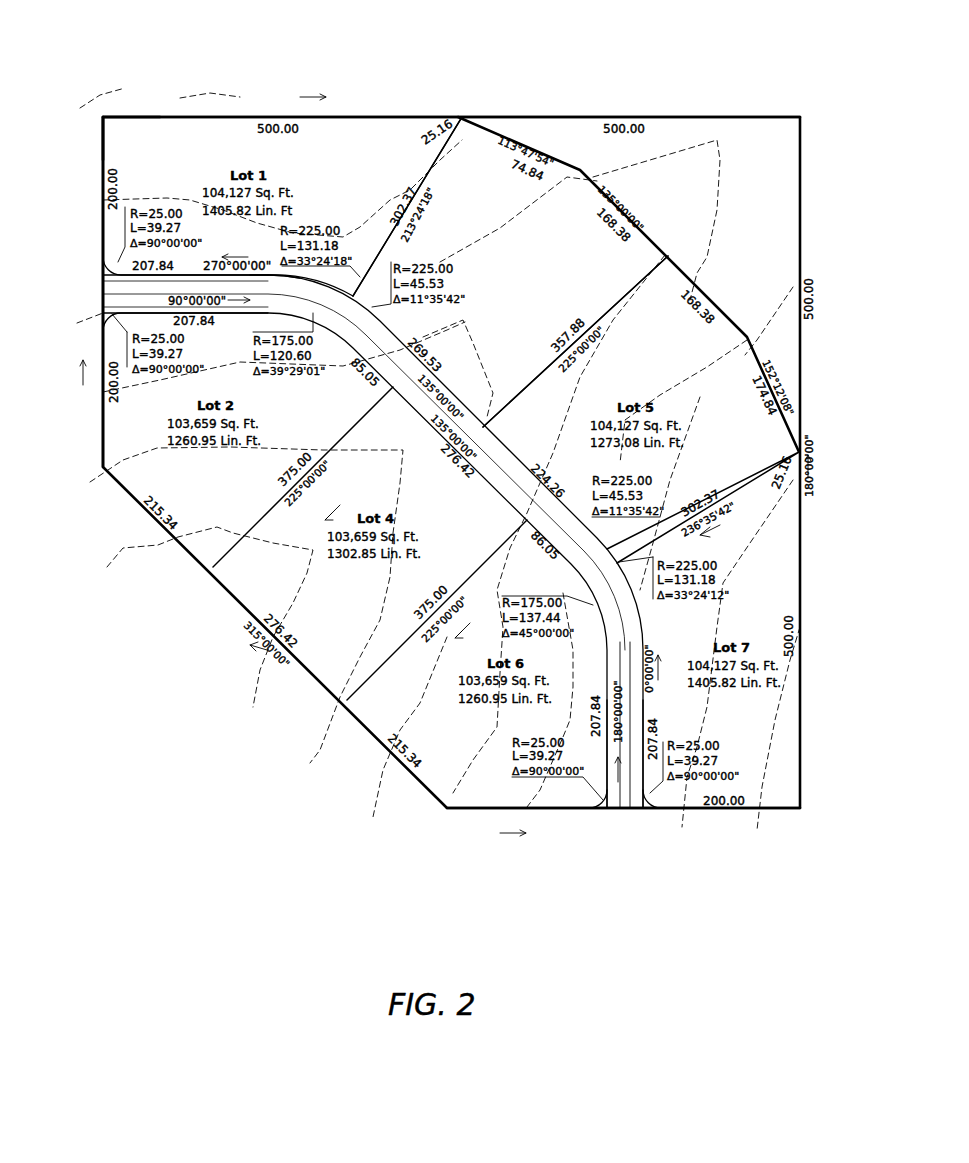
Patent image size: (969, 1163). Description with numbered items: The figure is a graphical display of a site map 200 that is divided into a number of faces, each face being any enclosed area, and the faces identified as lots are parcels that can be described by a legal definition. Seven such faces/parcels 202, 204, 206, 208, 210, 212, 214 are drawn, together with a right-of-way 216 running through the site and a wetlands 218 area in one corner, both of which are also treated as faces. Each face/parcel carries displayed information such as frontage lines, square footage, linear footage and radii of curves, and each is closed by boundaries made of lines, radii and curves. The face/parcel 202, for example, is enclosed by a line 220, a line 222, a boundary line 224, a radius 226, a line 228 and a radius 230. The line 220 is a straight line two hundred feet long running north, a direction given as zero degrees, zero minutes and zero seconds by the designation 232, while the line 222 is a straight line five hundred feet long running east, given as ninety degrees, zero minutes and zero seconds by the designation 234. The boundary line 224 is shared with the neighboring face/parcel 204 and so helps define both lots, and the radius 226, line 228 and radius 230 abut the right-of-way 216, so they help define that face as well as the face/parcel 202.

The site map 200 is at (305, 800).
The face/parcel 202 is at (123, 137).
The face/parcel 204 is at (485, 190).
The face/parcel 206 is at (618, 320).
The face/parcel 208 is at (762, 787).
The face/parcel 210 is at (456, 812).
The face/parcel 212 is at (267, 558).
The face/parcel 214 is at (247, 495).
The right-of-way 216 is at (633, 808).
The wetlands 218 is at (740, 157).
The line 220 is at (103, 238).
The line 222 is at (235, 117).
The boundary line 224 is at (430, 182).
The radius 226 is at (353, 290).
The line 228 is at (273, 275).
The radius 230 is at (108, 265).
The designation 232 is at (97, 330).
The designation 234 is at (316, 95).